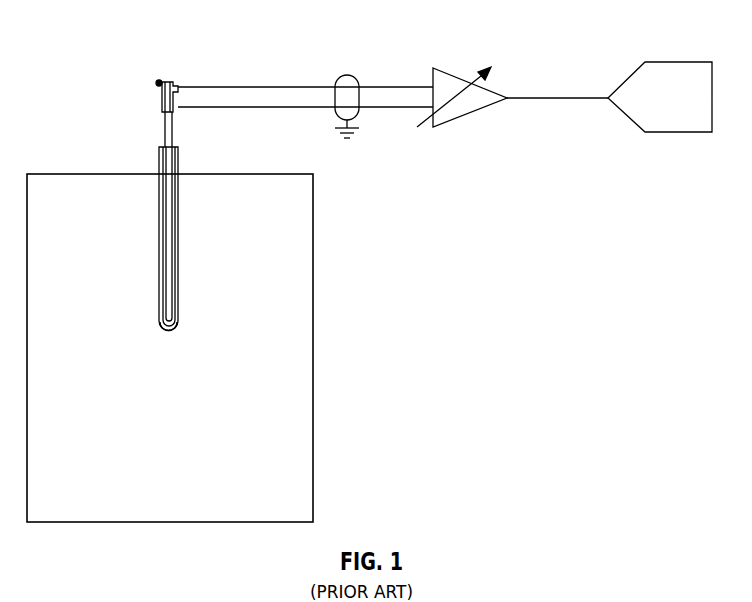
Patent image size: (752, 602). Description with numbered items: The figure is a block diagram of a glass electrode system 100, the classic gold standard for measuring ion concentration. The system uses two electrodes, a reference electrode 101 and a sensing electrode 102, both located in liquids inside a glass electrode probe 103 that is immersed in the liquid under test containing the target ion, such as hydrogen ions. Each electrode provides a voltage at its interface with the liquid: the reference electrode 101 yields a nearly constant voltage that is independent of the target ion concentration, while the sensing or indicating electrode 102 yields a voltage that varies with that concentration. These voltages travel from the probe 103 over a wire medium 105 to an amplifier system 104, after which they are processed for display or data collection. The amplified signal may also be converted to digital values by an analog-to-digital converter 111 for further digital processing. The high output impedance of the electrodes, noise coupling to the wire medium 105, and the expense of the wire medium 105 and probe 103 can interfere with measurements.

The glass electrode system 100 is at (85, 47).
The reference electrode 101 is at (176, 287).
The sensing electrode 102 is at (179, 328).
The glass electrode probe 103 is at (158, 96).
The amplifier system 104 is at (470, 112).
The wire medium 105 is at (351, 76).
The analog-to-digital converter (ADC) 111 is at (661, 62).